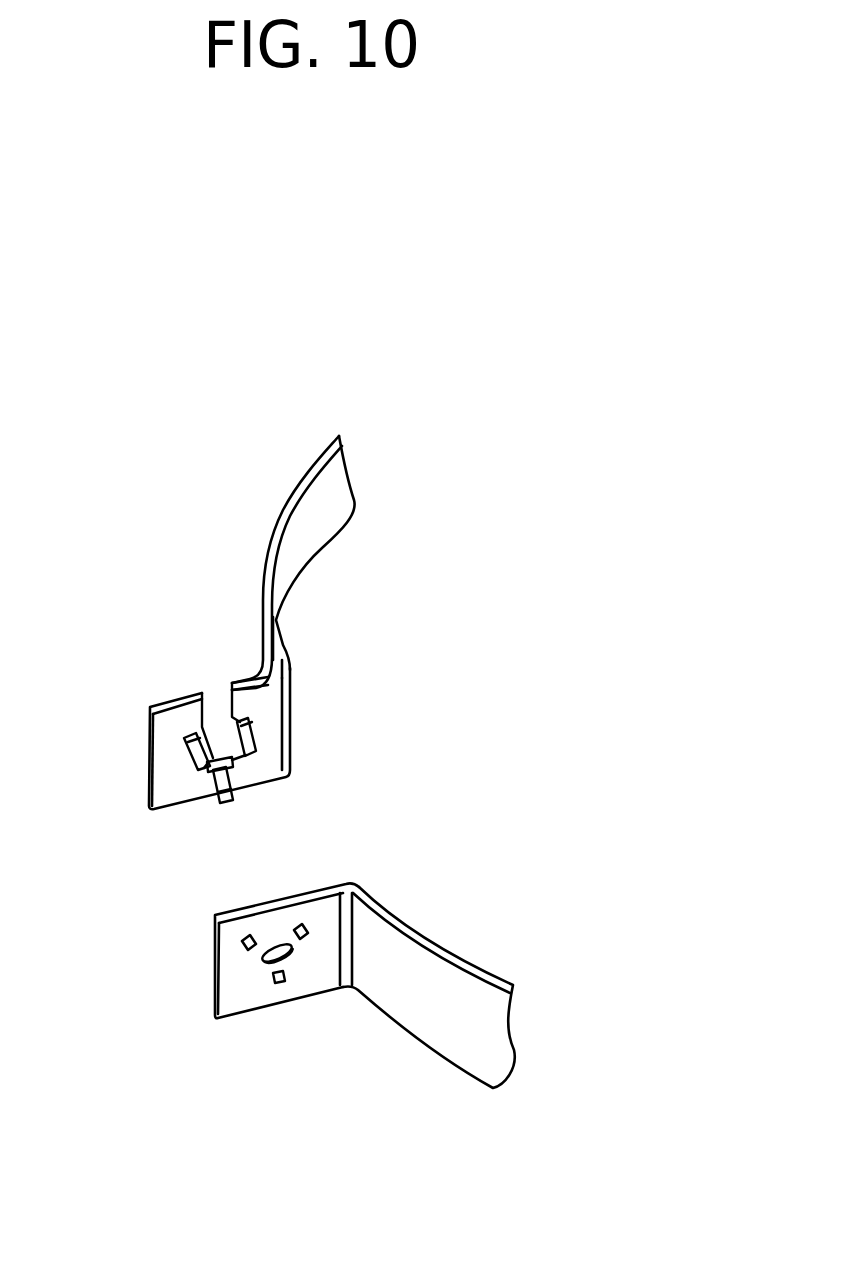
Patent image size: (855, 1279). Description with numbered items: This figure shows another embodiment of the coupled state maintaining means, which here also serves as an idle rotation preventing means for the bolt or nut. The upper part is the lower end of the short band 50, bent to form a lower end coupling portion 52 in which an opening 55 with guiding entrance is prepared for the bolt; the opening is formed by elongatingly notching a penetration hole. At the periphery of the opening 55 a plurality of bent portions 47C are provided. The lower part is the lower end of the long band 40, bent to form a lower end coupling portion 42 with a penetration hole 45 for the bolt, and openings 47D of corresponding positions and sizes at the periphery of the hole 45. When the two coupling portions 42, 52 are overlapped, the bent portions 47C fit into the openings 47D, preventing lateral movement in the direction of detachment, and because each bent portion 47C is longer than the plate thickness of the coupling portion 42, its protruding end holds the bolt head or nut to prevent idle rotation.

The long band 40 is at (475, 927).
The lower end coupling portion 42 is at (233, 993).
The penetration hole 45 is at (266, 961).
The bent portions 47C is at (214, 795).
The openings 47D is at (282, 984).
The short band 50 is at (350, 573).
The lower end coupling portion 52 is at (162, 735).
The opening with guiding entrance 55 is at (218, 742).